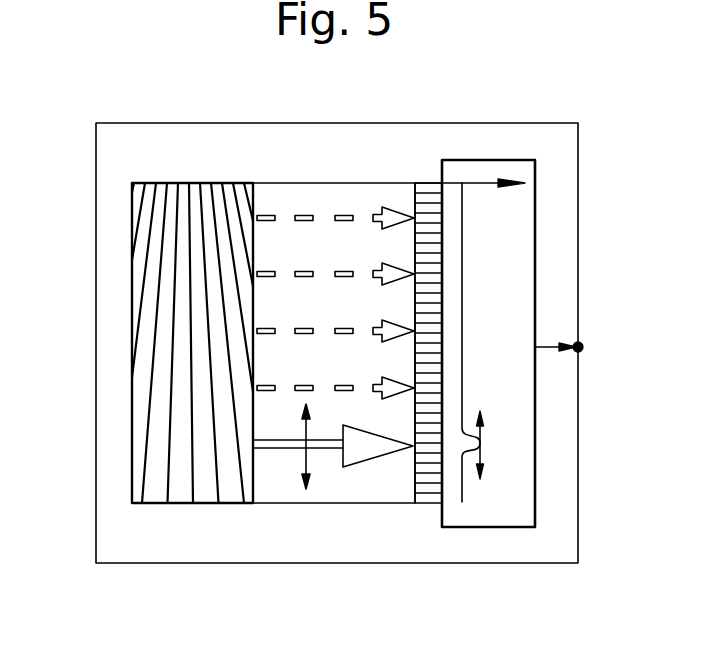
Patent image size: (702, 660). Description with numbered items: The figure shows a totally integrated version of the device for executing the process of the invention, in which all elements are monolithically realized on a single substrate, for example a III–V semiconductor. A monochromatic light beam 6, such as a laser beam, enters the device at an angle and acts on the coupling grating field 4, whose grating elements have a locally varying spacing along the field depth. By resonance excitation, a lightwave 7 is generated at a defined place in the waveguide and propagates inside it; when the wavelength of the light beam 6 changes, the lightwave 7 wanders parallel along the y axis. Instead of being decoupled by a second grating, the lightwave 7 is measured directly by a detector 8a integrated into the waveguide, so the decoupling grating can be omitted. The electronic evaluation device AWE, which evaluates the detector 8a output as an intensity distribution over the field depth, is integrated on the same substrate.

The grating field 4 is at (188, 183).
The light beam 6 is at (207, 353).
The lightwave 7 is at (282, 448).
The detector 8a is at (429, 190).
The electronic evaluation device AWE is at (489, 170).